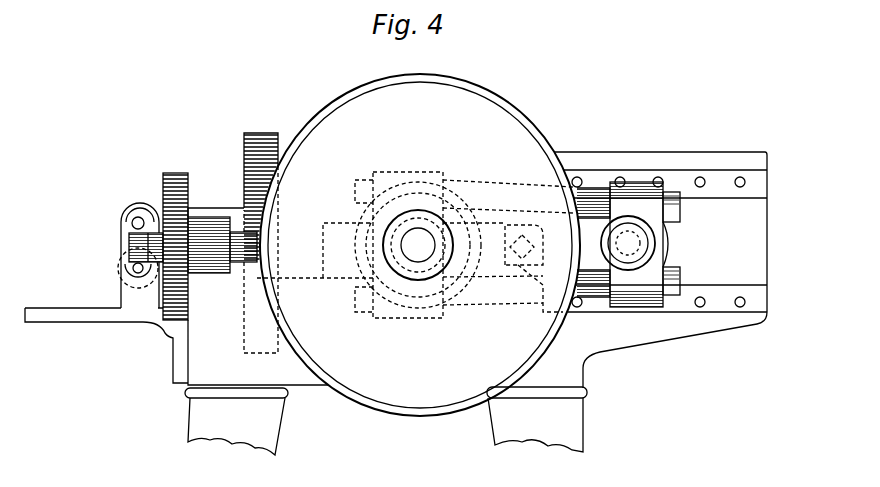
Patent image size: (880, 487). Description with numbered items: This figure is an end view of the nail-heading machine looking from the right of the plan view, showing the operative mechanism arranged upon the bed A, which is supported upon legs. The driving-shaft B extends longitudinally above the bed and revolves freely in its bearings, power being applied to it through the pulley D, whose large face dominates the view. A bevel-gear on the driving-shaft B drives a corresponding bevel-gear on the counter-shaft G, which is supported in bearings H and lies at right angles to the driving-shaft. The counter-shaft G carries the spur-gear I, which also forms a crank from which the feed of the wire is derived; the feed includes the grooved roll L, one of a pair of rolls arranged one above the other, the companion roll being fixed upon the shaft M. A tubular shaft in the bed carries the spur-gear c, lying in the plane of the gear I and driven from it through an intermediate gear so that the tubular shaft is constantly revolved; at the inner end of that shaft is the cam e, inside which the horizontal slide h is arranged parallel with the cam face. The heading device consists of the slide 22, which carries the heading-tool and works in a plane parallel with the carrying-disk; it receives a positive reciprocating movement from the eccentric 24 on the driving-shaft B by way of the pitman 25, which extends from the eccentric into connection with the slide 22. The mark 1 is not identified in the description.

The frame 1 is at (680, 360).
The bed A is at (386, 412).
The driving-shaft B is at (418, 245).
The pulley D is at (420, 245).
The spur-gear c is at (175, 237).
The cam e is at (261, 235).
The counter-shaft G is at (243, 239).
The bearings H is at (209, 245).
The spur-gear I is at (192, 207).
The grooved roll L is at (129, 255).
The horizontal slide h is at (124, 284).
The shaft M is at (127, 268).
The slide 22 is at (655, 244).
The eccentric 24 is at (418, 245).
The pitman 25 is at (433, 245).